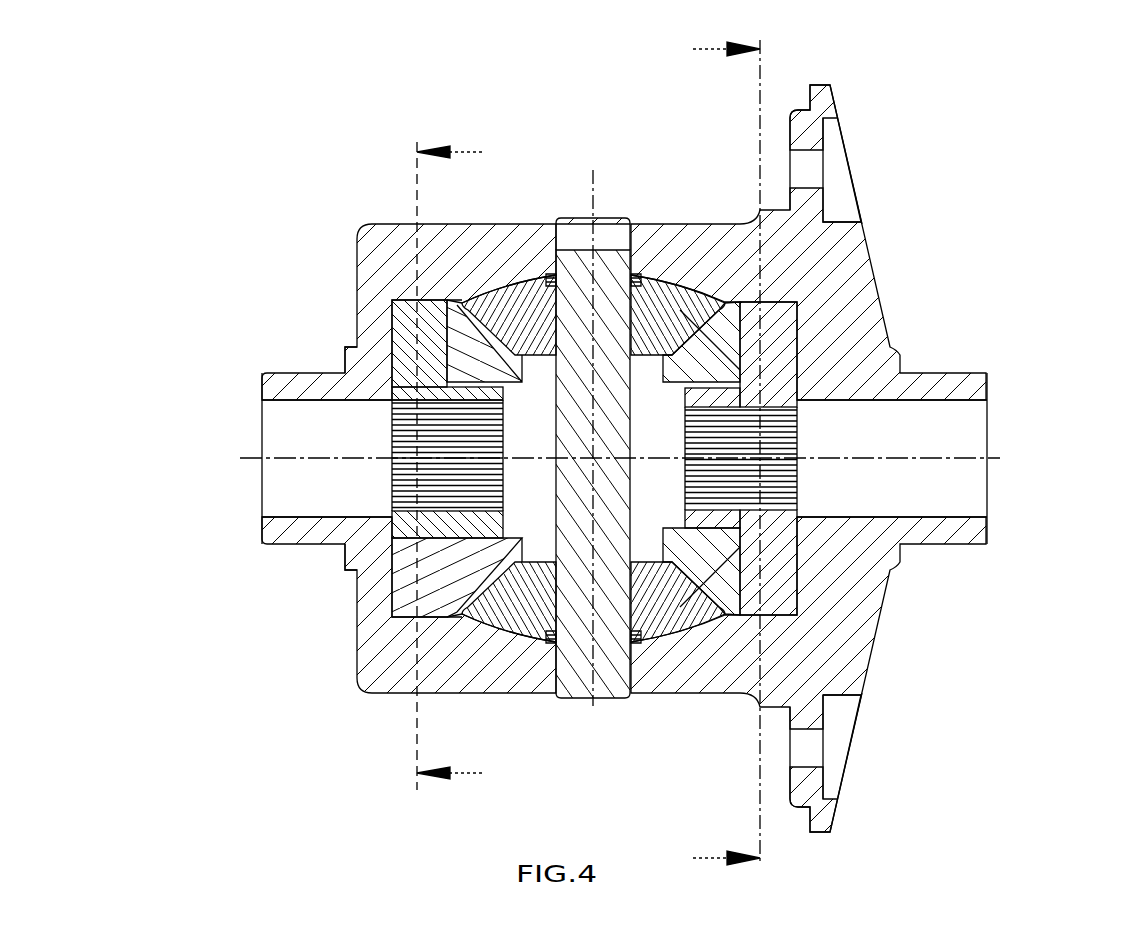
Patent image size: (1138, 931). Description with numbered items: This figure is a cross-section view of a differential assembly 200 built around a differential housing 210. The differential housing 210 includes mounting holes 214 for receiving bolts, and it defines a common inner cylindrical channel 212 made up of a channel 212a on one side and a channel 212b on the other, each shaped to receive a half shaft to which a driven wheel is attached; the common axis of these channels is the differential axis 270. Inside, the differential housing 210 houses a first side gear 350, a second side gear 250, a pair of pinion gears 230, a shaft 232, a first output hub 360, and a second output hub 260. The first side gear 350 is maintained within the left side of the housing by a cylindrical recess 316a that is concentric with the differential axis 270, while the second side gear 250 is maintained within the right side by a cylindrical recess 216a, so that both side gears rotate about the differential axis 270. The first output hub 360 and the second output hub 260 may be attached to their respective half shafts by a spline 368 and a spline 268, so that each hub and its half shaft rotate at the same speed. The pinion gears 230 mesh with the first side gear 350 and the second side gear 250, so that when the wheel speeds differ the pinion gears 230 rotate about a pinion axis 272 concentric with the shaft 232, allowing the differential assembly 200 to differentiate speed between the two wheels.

The differential assembly 200 is at (352, 132).
The differential housing 210 is at (388, 262).
The common inner cylindrical channel 212 is at (295, 483).
The channel 212a is at (293, 433).
The channel 212b is at (935, 480).
The mounting holes 214 is at (805, 170).
The cylindrical recess 216a is at (822, 220).
The pinion gears 230 is at (652, 292).
The shaft 232 is at (580, 670).
The second side gear 250 is at (775, 582).
The second output hub 260 is at (773, 523).
The spline 268 is at (773, 438).
The differential axis 270 is at (937, 457).
The pinion axis 272 is at (592, 187).
The cylindrical recess 316a is at (403, 299).
The first side gear 350 is at (455, 550).
The first output hub 360 is at (350, 545).
The spline 368 is at (407, 443).